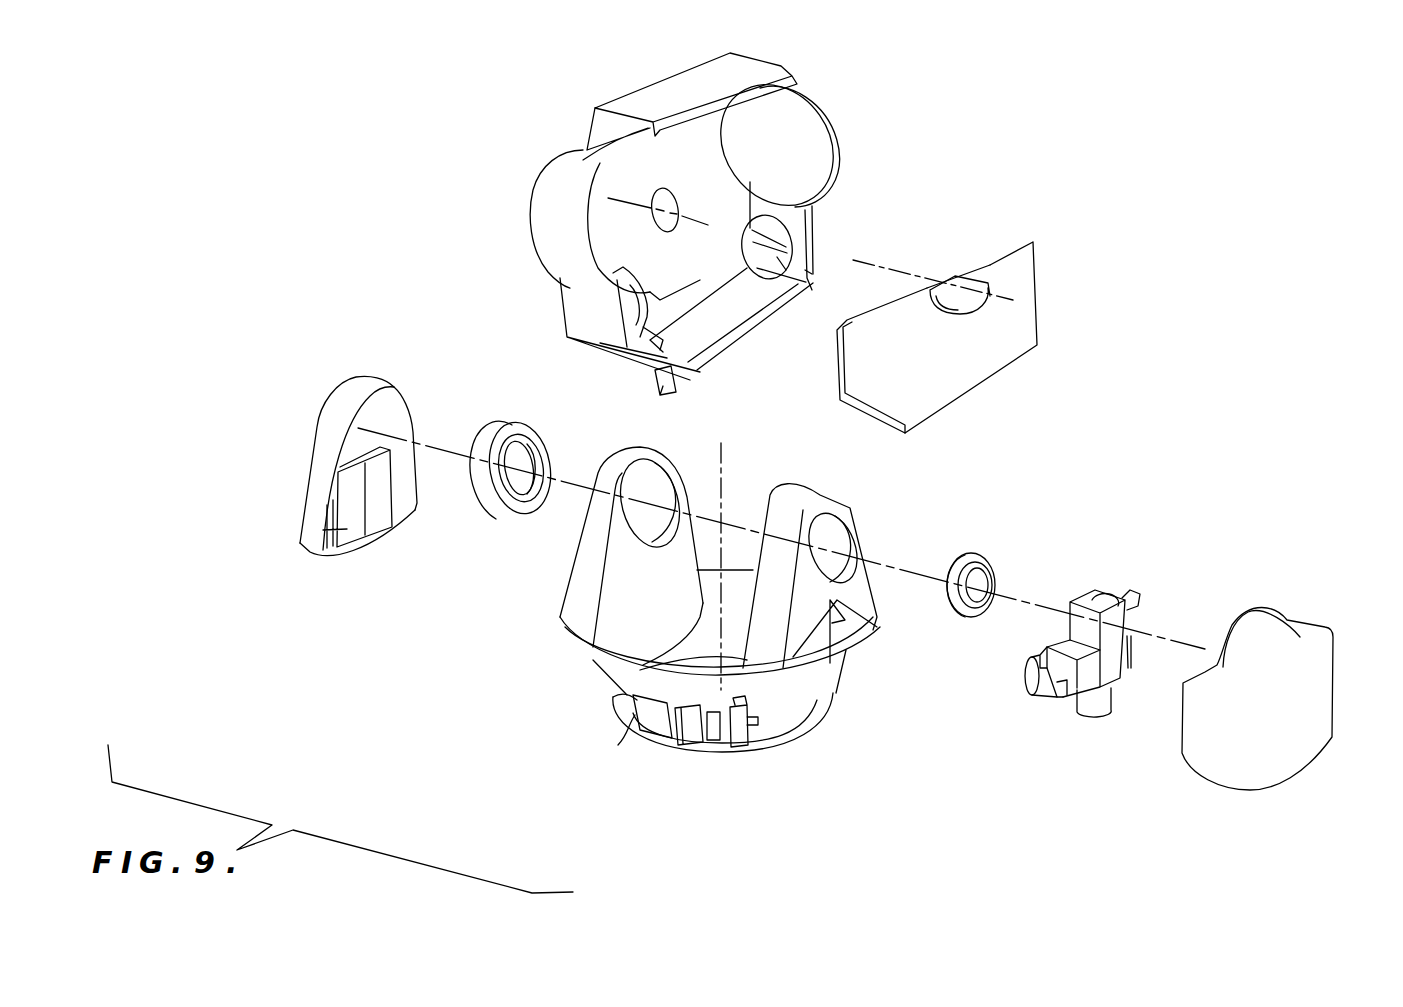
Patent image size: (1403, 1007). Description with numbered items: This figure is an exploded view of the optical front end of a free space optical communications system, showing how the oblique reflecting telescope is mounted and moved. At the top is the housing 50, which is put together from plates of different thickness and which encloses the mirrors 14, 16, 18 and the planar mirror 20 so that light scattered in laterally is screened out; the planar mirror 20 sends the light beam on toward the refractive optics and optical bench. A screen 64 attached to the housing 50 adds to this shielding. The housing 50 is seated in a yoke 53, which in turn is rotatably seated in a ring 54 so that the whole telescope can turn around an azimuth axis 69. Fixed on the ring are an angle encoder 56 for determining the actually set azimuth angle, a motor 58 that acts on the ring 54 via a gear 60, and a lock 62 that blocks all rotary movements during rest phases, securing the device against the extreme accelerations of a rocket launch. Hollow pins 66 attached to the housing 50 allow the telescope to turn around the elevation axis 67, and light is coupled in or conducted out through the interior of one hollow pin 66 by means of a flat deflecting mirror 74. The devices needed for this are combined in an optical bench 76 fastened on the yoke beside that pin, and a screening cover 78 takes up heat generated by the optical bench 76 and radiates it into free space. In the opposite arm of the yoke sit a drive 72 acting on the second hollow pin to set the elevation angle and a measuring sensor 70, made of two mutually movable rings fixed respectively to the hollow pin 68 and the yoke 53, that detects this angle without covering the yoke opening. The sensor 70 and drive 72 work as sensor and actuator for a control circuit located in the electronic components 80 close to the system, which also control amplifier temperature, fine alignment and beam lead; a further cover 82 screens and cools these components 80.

The mirror 14 is at (798, 98).
The mirror 16 is at (623, 316).
The mirror 18 is at (808, 279).
The planar mirror 20 is at (690, 370).
The housing 50 is at (680, 75).
The yoke 53 is at (843, 512).
The ring 54 is at (820, 702).
The angle encoder 56 is at (830, 717).
The motor 58 is at (692, 730).
The gear 60 is at (740, 747).
The lock 62 is at (630, 740).
The screen 64 is at (580, 222).
The hollow pin 66 is at (982, 304).
The elevation axis 67 is at (906, 272).
The hollow pin 68 is at (833, 541).
The azimuth axis 69 is at (727, 478).
The measuring sensor 70 is at (993, 566).
The drive 72 is at (535, 435).
The flat deflecting mirror 74 is at (806, 228).
The optical bench 76 is at (1125, 622).
The screening cover 78 is at (1303, 653).
The components of the electronic device 80 is at (320, 541).
The cover 82 is at (330, 447).